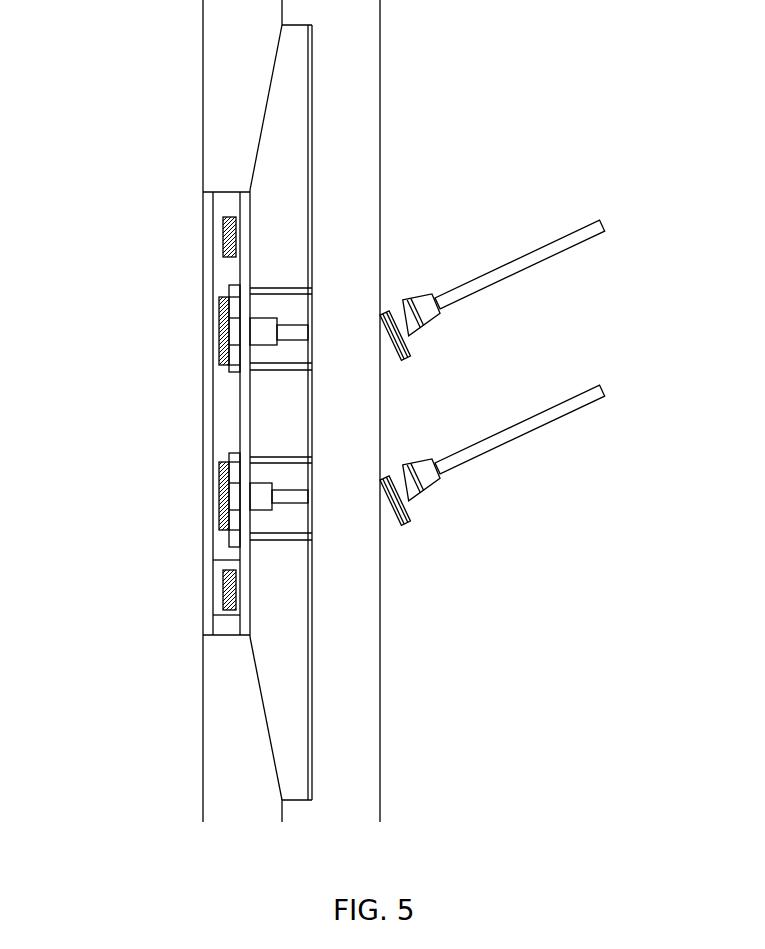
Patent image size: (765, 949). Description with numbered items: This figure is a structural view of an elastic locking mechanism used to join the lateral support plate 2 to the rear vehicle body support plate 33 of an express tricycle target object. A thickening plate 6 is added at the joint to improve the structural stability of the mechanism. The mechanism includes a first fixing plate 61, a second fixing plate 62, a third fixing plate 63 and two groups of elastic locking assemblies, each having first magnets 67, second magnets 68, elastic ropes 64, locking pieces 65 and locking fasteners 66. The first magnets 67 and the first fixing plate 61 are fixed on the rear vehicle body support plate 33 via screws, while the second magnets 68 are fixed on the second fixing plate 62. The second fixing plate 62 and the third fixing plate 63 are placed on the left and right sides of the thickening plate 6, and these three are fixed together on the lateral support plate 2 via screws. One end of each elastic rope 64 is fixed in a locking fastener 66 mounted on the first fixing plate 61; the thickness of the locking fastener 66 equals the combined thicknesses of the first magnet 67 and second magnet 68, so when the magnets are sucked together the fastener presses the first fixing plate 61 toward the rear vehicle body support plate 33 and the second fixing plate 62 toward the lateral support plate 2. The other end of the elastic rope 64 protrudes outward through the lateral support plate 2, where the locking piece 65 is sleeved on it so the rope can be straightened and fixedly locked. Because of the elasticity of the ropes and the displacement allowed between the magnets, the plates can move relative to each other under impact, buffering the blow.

The lateral support plate 2 is at (451, 411).
The thickening plate 6 is at (366, 411).
The rear vehicle body support plate 33 is at (131, 411).
The first fixing plate 61 is at (155, 413).
The second fixing plate 62 is at (151, 477).
The third fixing plate 63 is at (366, 414).
The elastic rope 64 is at (559, 349).
The locking piece 65 is at (485, 423).
The locking fastener 66 is at (150, 331).
The first magnet 67 is at (150, 593).
The second magnet 68 is at (362, 624).